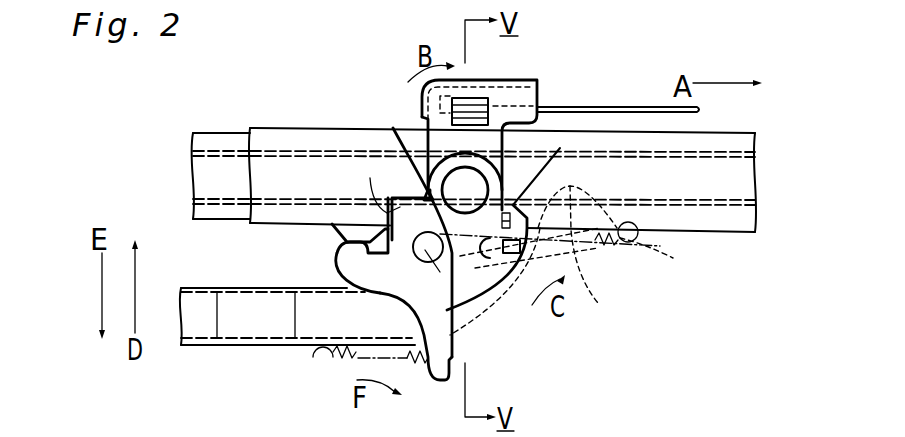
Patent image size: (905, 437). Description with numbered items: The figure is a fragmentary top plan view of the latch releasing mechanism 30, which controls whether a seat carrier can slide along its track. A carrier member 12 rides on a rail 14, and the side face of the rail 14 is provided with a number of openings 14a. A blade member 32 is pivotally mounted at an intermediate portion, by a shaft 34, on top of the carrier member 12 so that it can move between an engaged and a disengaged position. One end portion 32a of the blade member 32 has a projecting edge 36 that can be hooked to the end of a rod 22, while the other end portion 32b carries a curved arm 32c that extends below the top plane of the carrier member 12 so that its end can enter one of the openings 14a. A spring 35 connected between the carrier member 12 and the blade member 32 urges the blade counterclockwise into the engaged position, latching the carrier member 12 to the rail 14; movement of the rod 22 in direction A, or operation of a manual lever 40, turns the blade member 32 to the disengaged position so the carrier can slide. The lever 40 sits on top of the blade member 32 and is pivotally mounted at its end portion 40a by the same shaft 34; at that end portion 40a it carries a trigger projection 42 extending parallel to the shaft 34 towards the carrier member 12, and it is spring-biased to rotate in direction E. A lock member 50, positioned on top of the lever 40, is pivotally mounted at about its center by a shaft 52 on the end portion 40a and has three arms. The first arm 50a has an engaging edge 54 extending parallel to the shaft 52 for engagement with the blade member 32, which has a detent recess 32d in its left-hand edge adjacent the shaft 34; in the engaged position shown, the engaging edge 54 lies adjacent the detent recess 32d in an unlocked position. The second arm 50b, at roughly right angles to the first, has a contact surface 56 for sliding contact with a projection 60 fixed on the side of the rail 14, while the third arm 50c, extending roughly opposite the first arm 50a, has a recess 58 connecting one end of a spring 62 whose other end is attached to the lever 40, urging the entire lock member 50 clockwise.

The carrier member 12 is at (292, 138).
The rail 14 is at (213, 142).
The openings 14a is at (667, 258).
The rod 22 is at (645, 110).
The latch releasing mechanism 30 is at (590, 71).
The blade member 32 is at (453, 143).
The end portion 32a is at (522, 97).
The other end portion 32b is at (521, 270).
The curved arm 32c is at (544, 260).
The detent recess 32d is at (433, 206).
The shaft 34 is at (457, 188).
The spring 35 is at (598, 245).
The projecting edge 36 is at (480, 100).
The lever 40 is at (257, 333).
The end portion 40a is at (512, 282).
The trigger projection 42 is at (560, 148).
The lock member 50 is at (445, 297).
The first arm 50a is at (360, 185).
The second arm 50b is at (337, 280).
The third arm 50c is at (437, 343).
The shaft 52 is at (478, 274).
The engaging edge 54 is at (410, 198).
The contact surface 56 is at (345, 247).
The recess 58 is at (422, 295).
The projection 60 is at (333, 243).
The spring 62 is at (393, 363).